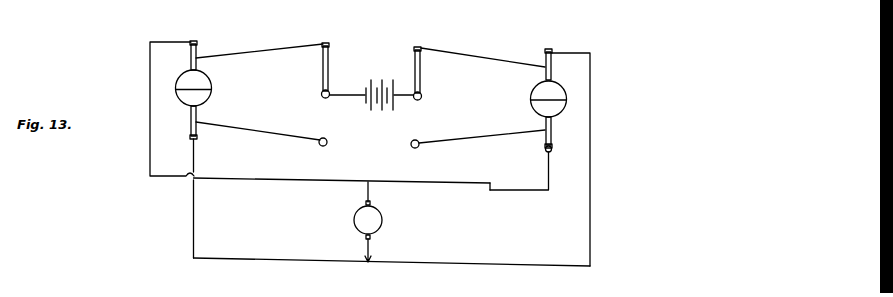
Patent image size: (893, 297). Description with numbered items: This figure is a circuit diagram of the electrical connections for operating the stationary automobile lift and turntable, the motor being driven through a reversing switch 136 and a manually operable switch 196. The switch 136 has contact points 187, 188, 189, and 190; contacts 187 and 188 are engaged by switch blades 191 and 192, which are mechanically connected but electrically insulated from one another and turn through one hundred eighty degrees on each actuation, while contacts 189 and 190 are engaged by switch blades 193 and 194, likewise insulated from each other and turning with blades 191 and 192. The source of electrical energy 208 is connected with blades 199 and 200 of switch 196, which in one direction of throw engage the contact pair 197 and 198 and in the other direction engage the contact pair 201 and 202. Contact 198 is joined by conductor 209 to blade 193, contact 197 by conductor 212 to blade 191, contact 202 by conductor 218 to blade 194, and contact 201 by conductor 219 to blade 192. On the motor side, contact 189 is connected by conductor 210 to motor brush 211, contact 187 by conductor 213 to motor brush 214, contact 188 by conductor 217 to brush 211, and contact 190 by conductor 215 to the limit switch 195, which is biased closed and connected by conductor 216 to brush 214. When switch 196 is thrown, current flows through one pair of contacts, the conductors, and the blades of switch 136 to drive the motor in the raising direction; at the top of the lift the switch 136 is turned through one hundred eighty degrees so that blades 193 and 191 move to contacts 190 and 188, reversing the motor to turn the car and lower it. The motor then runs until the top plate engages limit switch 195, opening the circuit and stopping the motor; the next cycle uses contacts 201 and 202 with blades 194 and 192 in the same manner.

The switch 136 is at (130, 94).
The contact point 187 is at (198, 42).
The contact point 188 is at (198, 138).
The contact point 189 is at (553, 50).
The contact point 190 is at (551, 150).
The switch blade 191 is at (198, 62).
The switch blade 192 is at (198, 112).
The switch blade 193 is at (546, 72).
The switch blade 194 is at (546, 125).
The limit switch 195 is at (479, 187).
The manually operable switch 196 is at (393, 36).
The contact 197 is at (329, 44).
The contact 198 is at (421, 49).
The blade 199 is at (330, 59).
The blade 200 is at (422, 76).
The contact 201 is at (326, 146).
The contact 202 is at (418, 148).
The source of electrical energy 208 is at (376, 112).
The conductor 209 is at (486, 55).
The conductor 210 is at (591, 160).
The motor brush 211 is at (372, 238).
The conductor 212 is at (270, 50).
The conductor 213 is at (214, 178).
The motor brush 214 is at (365, 201).
The conductor 215 is at (529, 191).
The conductor 216 is at (419, 187).
The conductor 217 is at (195, 201).
The conductor 218 is at (470, 129).
The conductor 219 is at (261, 132).